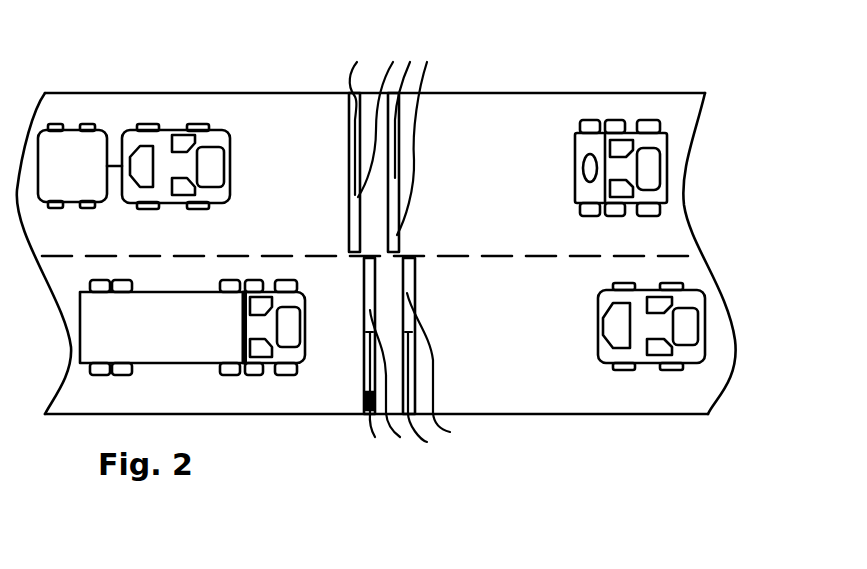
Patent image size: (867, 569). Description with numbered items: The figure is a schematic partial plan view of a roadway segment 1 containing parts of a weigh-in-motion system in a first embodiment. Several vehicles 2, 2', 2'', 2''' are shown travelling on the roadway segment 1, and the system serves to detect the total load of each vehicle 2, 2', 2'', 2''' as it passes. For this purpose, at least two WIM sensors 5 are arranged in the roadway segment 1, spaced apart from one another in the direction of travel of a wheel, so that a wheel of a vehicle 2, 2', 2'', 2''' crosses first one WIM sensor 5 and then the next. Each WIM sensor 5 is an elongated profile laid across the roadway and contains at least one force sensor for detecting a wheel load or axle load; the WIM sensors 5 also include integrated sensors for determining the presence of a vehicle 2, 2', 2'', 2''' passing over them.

The roadway segment 1 is at (600, 434).
The vehicle 2 is at (165, 123).
The vehicle 2' is at (625, 122).
The vehicle 2'' is at (205, 378).
The vehicle 2''' is at (655, 370).
The WIM sensor 5 is at (442, 60).